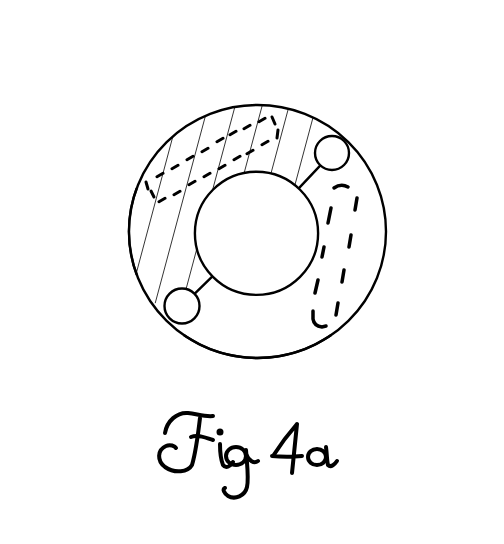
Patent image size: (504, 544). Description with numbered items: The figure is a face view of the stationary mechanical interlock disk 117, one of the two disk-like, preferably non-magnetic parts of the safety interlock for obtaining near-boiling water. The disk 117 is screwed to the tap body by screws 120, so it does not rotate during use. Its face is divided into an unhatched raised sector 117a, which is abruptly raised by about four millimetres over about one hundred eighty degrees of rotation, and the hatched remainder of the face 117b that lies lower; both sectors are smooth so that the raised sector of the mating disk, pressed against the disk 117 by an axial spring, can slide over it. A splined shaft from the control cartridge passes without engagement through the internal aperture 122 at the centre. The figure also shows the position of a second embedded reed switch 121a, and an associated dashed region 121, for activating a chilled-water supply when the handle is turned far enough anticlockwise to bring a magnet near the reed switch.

The mechanical interlock disk 117 is at (93, 158).
The raised sector 117a is at (247, 322).
The lower face 117b is at (157, 272).
The screws 120 is at (350, 147).
The slot 121 is at (327, 337).
The second embedded reed switch 121a is at (267, 116).
The internal aperture 122 is at (284, 250).